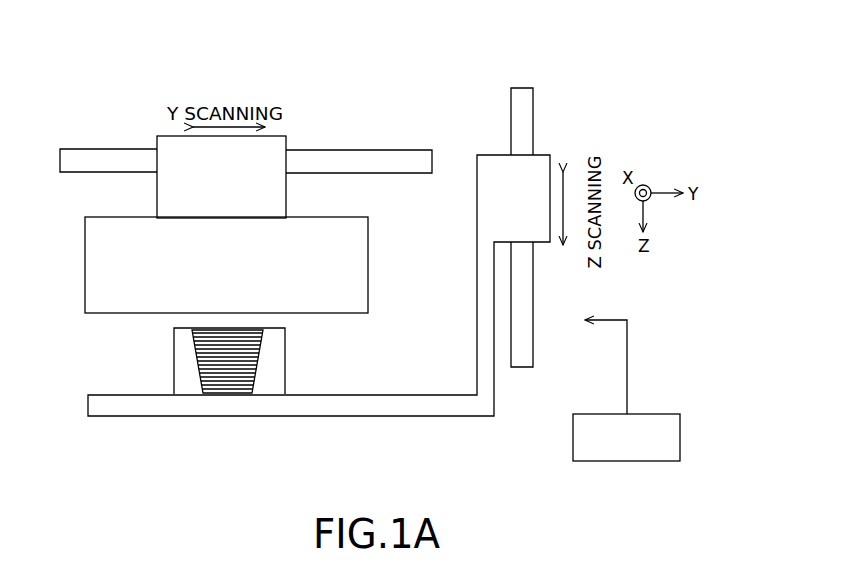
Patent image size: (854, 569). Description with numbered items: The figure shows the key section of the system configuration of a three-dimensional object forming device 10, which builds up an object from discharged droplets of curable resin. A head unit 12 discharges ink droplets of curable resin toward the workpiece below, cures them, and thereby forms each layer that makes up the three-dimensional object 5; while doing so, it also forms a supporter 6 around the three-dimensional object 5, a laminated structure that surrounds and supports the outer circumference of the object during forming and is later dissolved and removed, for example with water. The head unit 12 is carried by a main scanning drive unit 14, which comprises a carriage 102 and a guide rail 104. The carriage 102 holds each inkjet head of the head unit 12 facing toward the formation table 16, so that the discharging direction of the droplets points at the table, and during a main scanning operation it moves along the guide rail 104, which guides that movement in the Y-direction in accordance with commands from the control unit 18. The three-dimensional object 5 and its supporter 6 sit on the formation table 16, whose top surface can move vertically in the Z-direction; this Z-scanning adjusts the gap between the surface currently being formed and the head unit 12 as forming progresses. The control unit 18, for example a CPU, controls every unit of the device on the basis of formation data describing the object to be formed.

The three-dimensional object forming device 10 is at (523, 47).
The head unit 12 is at (122, 302).
The main scanning drive unit 14 is at (246, 137).
The carriage 102 is at (298, 203).
The guide rail 104 is at (305, 93).
The three-dimensional object 5 is at (196, 360).
The supporter 6 is at (273, 370).
The formation table 16 is at (208, 412).
The control unit 18 is at (613, 461).